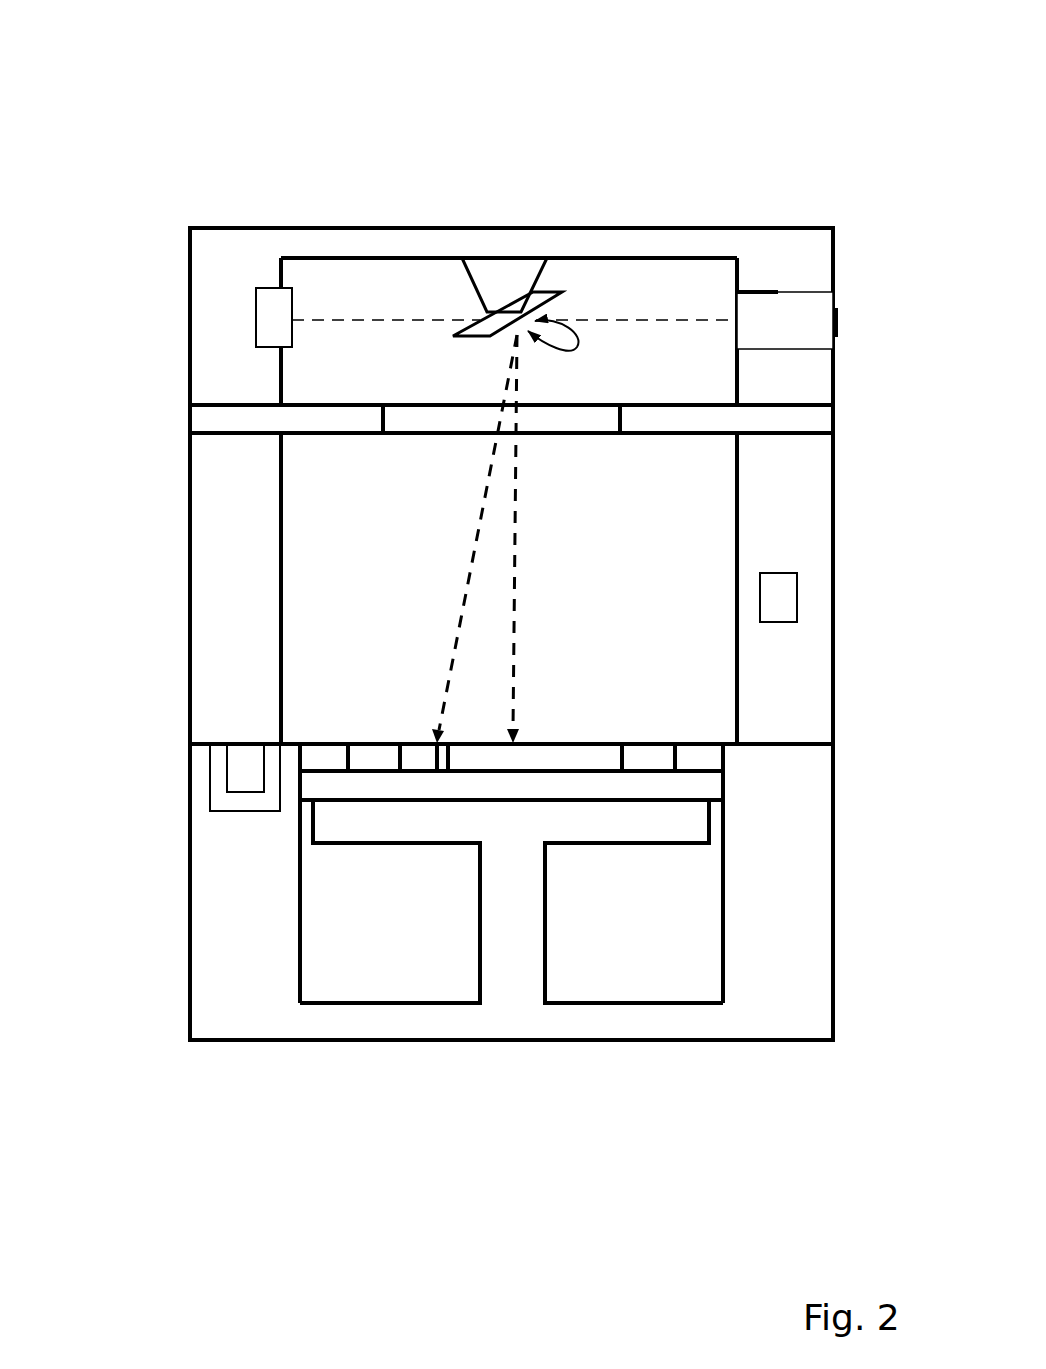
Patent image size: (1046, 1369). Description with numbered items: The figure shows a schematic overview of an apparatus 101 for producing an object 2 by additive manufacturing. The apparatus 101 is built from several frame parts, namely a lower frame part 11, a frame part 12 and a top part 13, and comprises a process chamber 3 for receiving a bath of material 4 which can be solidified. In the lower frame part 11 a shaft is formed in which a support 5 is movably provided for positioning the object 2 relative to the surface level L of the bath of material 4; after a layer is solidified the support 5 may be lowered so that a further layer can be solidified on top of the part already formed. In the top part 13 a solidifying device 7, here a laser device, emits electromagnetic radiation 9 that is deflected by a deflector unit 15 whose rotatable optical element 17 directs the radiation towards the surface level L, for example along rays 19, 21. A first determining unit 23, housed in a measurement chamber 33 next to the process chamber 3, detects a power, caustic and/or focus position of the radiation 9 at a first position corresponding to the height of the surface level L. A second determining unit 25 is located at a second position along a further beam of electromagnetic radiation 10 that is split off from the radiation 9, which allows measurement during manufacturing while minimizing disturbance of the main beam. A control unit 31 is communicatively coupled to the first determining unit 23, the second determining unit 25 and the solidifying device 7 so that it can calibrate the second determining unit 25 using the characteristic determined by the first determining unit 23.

The apparatus 101 is at (243, 197).
The top part 13 is at (227, 317).
The second determining unit 25 is at (272, 288).
The further beam of electromagnetic radiation 10 is at (392, 320).
The deflector unit 15 is at (503, 278).
The rotatable optical element 17 is at (550, 293).
The electromagnetic radiation 9 is at (668, 320).
The solidifying device 7 is at (790, 290).
The ray 19 is at (465, 597).
The ray 21 is at (518, 552).
The process chamber 3 is at (350, 627).
The surface level L is at (563, 743).
The control unit 31 is at (777, 605).
The frame part 12 is at (227, 622).
The first determining unit 23 is at (245, 755).
The measurement chamber 33 is at (278, 800).
The lower frame part 11 is at (212, 913).
The object 2 is at (647, 763).
The material 4 is at (555, 753).
The support 5 is at (667, 867).